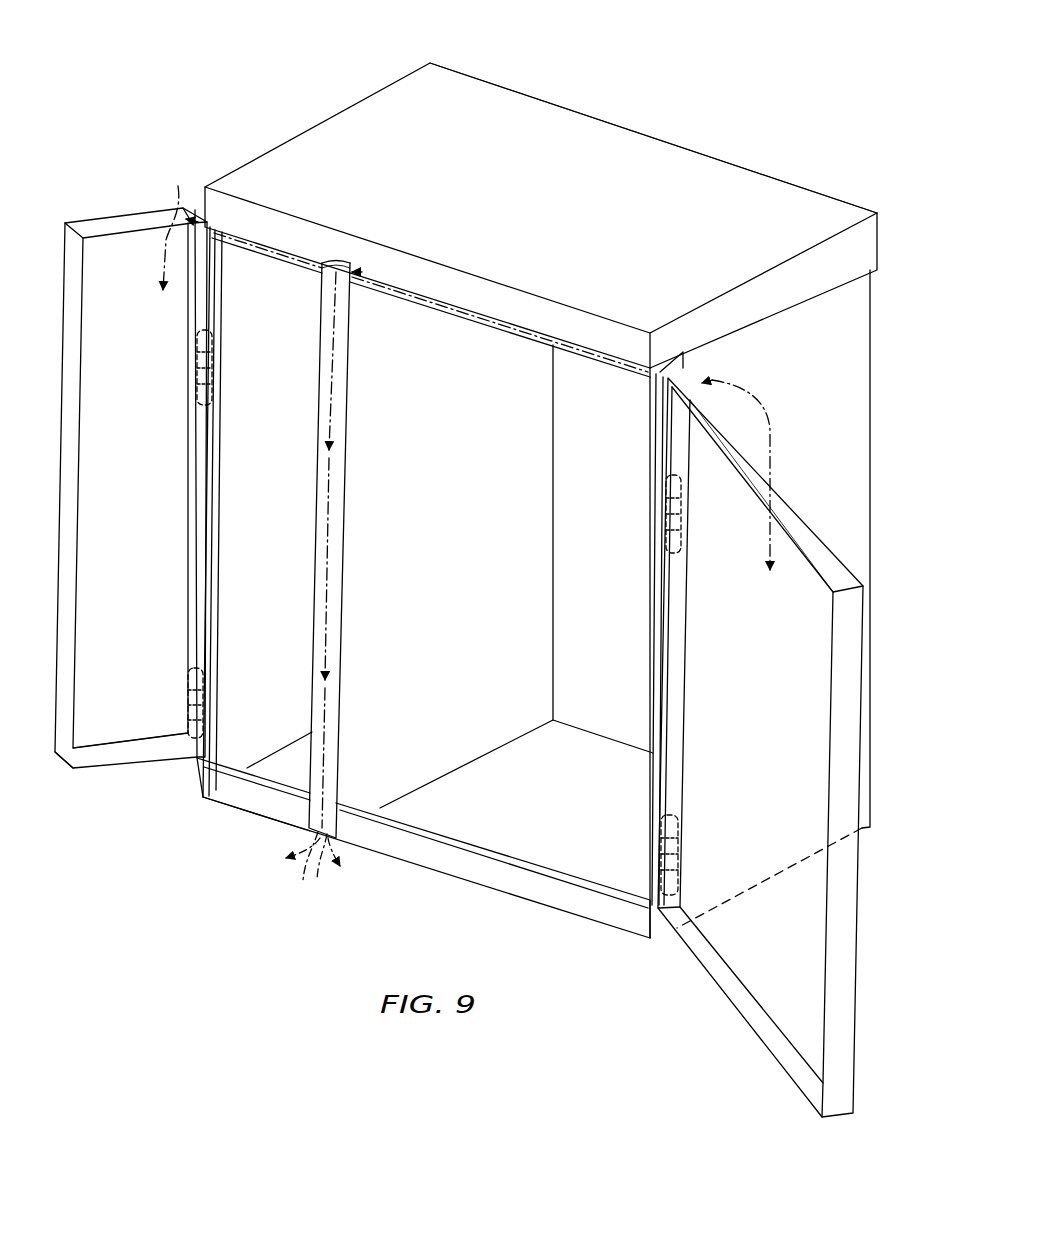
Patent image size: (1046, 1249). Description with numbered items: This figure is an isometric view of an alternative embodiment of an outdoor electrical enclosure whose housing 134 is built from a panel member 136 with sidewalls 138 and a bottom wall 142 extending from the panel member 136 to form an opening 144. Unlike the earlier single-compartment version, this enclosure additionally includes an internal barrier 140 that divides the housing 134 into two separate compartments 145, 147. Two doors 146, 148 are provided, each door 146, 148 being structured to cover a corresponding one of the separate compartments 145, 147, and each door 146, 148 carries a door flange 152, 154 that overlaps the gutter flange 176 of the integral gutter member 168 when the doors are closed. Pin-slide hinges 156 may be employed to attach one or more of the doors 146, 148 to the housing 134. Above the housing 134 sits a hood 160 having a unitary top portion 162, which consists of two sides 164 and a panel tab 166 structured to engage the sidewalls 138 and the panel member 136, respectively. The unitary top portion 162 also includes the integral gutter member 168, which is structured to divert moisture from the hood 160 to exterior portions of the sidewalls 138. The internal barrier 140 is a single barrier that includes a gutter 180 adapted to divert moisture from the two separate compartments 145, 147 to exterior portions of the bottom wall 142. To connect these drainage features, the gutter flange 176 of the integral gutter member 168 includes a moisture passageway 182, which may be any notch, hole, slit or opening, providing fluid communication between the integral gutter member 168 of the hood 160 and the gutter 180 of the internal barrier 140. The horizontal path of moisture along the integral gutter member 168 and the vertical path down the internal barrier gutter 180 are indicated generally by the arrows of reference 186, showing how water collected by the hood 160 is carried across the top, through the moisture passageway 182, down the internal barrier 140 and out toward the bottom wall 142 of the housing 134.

The housing 134 is at (524, 585).
The panel member 136 is at (623, 593).
The sidewalls 138 is at (862, 318).
The internal barrier 140 is at (456, 723).
The bottom wall 142 is at (398, 840).
The opening 144 is at (245, 428).
The separate compartment 145 is at (250, 742).
The door 146 is at (131, 723).
The separate compartment 147 is at (457, 802).
The door 148 is at (803, 988).
The door flange 152 is at (131, 461).
The door flange 154 is at (760, 747).
The pin-slide hinges 156 is at (214, 372).
The hood 160 is at (541, 186).
The unitary top portion 162 is at (660, 152).
The sides 164 is at (320, 120).
The panel tab 166 is at (540, 96).
The integral gutter member 168 is at (447, 335).
The gutter flange 176 is at (312, 255).
The gutter 180 is at (313, 507).
The moisture passageway 182 is at (338, 260).
The moisture path 186 is at (488, 527).